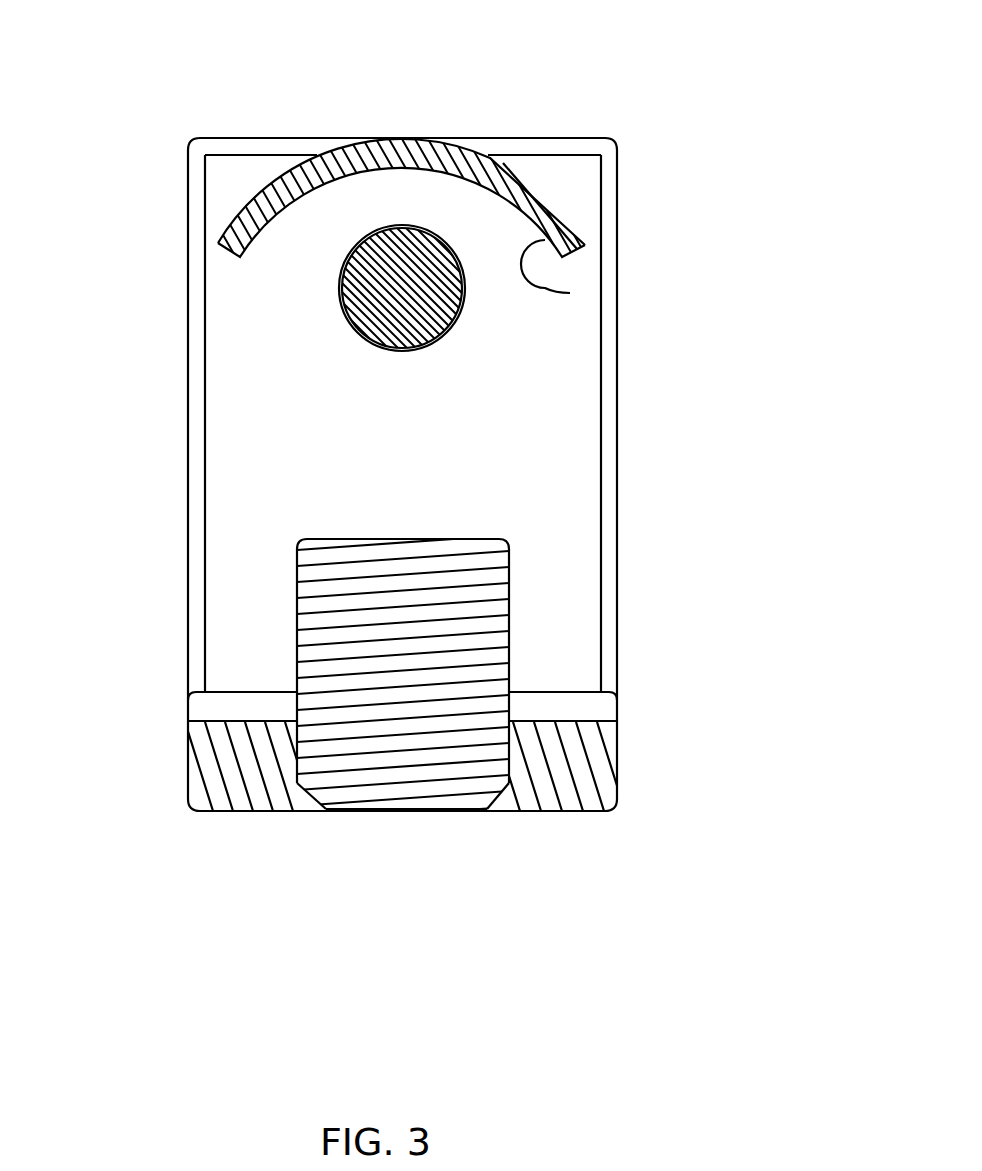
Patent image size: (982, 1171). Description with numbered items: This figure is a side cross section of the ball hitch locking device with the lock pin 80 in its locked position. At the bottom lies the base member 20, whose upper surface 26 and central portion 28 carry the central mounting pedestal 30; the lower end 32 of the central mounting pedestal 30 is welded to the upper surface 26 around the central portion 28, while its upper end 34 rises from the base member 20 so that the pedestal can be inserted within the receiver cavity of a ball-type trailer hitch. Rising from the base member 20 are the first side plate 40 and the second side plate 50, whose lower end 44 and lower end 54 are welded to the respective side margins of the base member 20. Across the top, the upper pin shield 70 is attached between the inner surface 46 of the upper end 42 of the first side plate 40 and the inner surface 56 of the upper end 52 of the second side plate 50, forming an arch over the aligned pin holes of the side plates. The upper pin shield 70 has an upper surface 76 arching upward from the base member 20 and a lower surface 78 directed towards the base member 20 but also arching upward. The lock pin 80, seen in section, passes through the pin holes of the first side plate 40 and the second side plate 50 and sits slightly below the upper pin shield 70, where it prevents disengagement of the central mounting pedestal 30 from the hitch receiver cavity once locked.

The base member 20 is at (603, 790).
The upper surface 26 is at (217, 717).
The central portion 28 is at (307, 803).
The central mounting pedestal 30 is at (457, 795).
The lower end 32 is at (365, 810).
The upper end 34 is at (392, 673).
The first side plate 40 is at (512, 430).
The second side plate 50 is at (617, 430).
The upper end 42 is at (500, 151).
The upper end 52 is at (573, 175).
The lower end 44 is at (680, 423).
The lower end 54 is at (567, 603).
The inner surface 46 is at (311, 423).
The inner surface 56 is at (313, 421).
The upper pin shield 70 is at (417, 139).
The upper surface 76 is at (381, 142).
The lower surface 78 is at (570, 293).
The lock pin 80 is at (357, 320).